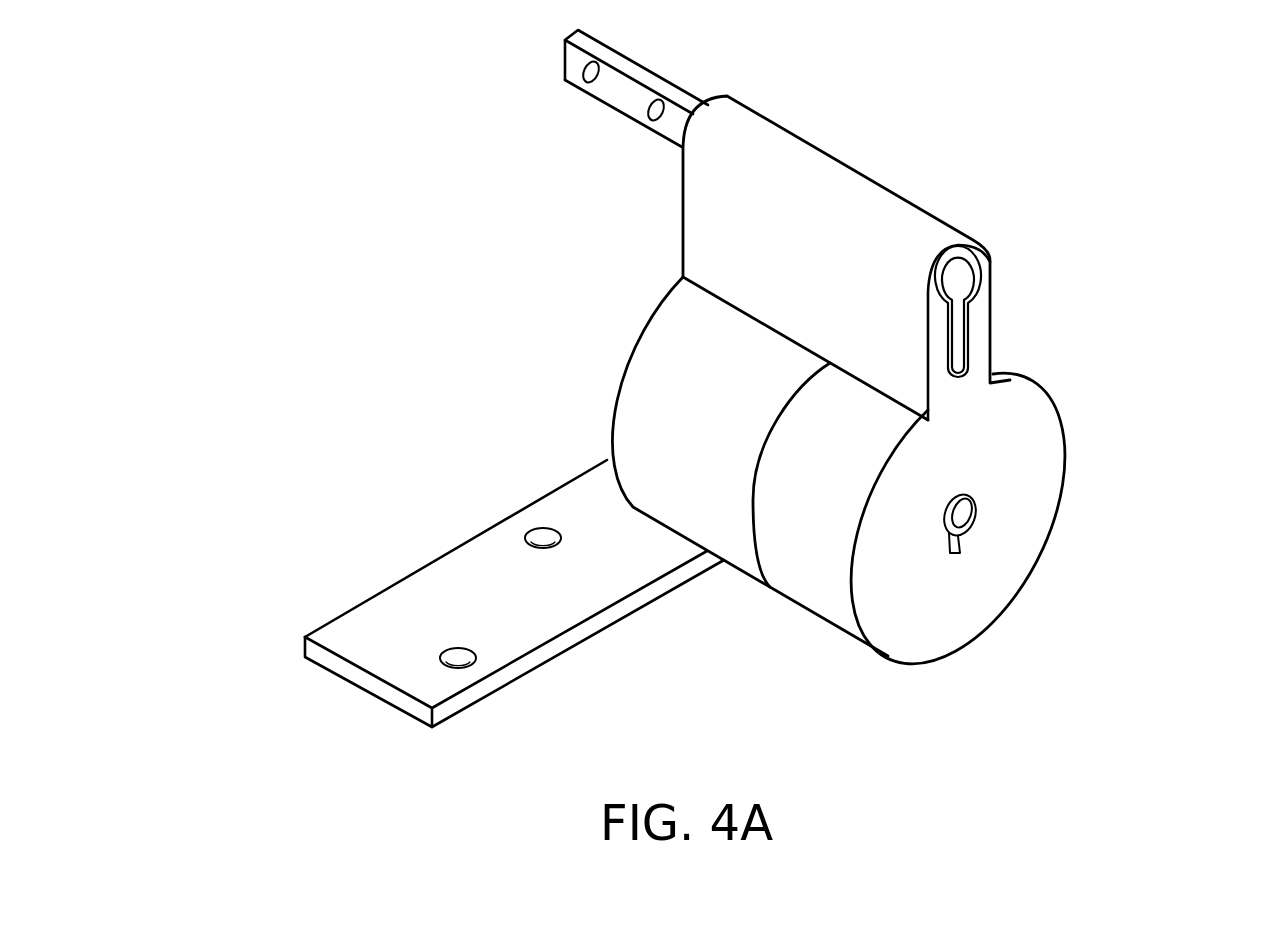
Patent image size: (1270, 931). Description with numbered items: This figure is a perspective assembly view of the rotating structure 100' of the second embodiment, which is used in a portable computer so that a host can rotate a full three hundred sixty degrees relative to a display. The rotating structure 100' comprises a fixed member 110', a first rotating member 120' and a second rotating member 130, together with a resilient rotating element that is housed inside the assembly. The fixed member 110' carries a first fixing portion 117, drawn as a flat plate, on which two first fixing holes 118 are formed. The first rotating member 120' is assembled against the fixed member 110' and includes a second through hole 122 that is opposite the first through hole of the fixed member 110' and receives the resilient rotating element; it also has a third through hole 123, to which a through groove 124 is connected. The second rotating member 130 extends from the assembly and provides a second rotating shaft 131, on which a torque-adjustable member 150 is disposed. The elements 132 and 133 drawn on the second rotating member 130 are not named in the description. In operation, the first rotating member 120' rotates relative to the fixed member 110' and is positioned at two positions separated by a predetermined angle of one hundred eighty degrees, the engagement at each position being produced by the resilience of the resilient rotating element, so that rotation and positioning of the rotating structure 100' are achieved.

The rotating structure 100' is at (679, 373).
The fixed member 110' is at (758, 376).
The first fixing portion 117 is at (514, 589).
The first fixing holes 118 is at (453, 648).
The first rotating member 120' is at (991, 513).
The second through hole 122 is at (963, 518).
The third through hole 123 is at (992, 273).
The through groove 124 is at (968, 340).
The second rotating member 130 is at (581, 135).
The second rotating shaft 131 is at (965, 290).
The tab 132 is at (617, 60).
The holes 133 is at (652, 110).
The torque-adjustable member 150 is at (1050, 309).